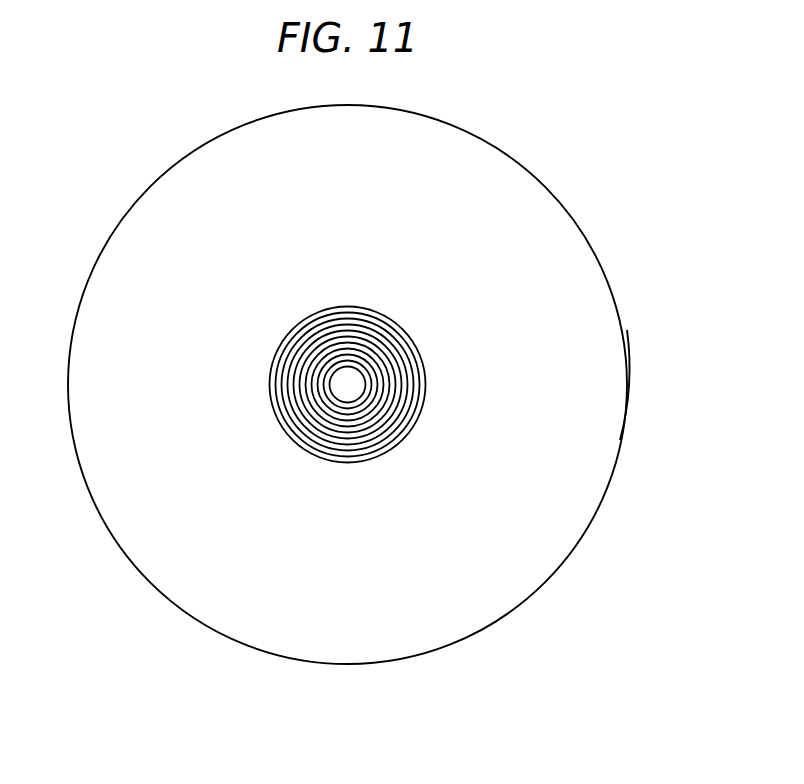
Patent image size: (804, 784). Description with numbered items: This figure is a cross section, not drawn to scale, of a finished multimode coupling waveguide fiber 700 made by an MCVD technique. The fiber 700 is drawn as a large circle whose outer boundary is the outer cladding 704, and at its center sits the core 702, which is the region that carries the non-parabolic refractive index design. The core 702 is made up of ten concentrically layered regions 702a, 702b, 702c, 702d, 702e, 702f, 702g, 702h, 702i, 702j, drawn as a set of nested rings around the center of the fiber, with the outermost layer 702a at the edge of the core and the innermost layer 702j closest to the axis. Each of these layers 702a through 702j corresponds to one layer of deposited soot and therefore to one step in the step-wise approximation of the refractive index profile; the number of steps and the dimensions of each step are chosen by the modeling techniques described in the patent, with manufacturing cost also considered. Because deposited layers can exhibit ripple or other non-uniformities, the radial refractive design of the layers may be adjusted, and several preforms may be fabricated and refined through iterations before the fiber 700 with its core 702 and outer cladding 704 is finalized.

The fiber 700 is at (545, 148).
The core 702 is at (250, 438).
The concentrically layered region 702a is at (313, 454).
The concentrically layered region 702b is at (337, 455).
The concentrically layered region 702c is at (370, 446).
The concentrically layered region 702d is at (396, 423).
The concentrically layered region 702e is at (401, 398).
The concentrically layered region 702f is at (396, 387).
The concentrically layered region 702g is at (387, 367).
The concentrically layered region 702h is at (374, 357).
The concentrically layered region 702i is at (357, 354).
The concentrically layered region 702j is at (327, 371).
The outer cladding 704 is at (628, 370).